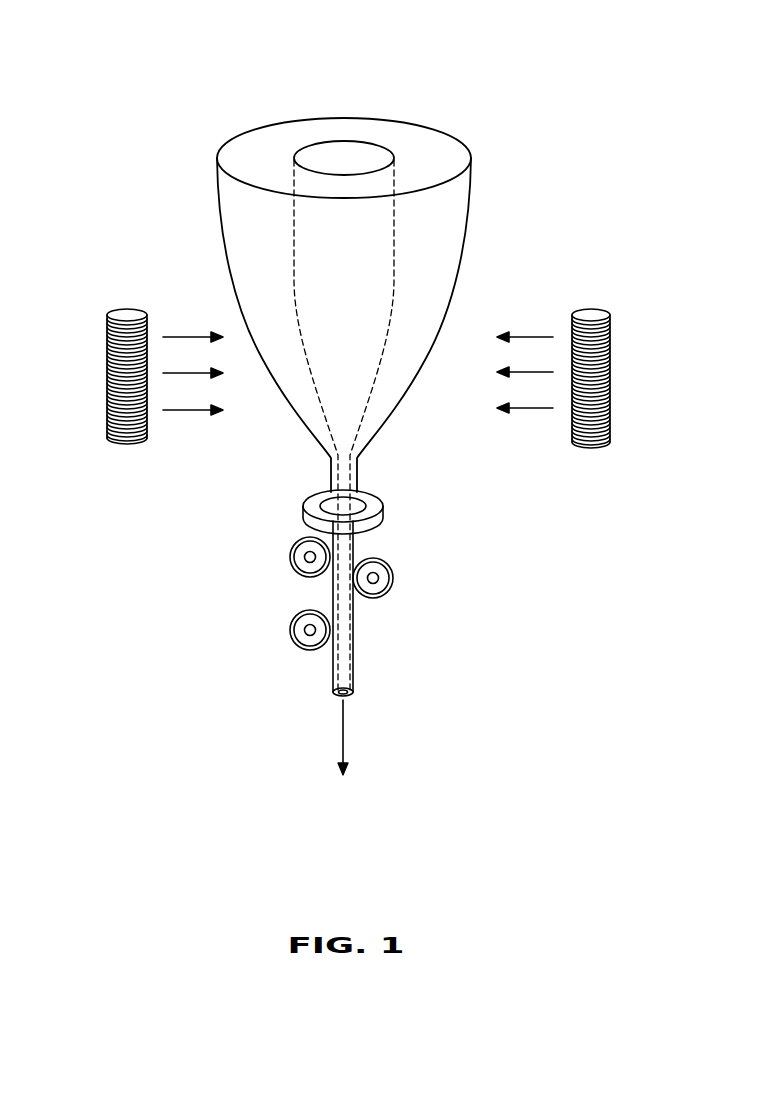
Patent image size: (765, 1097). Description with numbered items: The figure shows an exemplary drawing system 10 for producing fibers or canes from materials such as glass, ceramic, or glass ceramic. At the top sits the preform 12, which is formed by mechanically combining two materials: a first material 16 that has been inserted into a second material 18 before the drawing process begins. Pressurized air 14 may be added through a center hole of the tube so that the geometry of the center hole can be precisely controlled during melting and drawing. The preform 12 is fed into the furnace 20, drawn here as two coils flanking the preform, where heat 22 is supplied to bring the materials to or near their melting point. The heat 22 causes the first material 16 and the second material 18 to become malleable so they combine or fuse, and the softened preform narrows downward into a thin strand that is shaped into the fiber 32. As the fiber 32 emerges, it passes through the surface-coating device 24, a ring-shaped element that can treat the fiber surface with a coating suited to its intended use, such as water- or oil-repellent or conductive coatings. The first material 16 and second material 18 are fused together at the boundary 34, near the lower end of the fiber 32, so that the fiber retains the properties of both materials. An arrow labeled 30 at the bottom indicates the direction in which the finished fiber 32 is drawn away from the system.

The drawing system 10 is at (203, 62).
The preform 12 is at (200, 146).
The pressurized air 14 is at (341, 150).
The first material 16 is at (367, 155).
The second material 18 is at (447, 155).
The furnace 20 is at (110, 312).
The heat 22 is at (186, 301).
The surface-coating device 24 is at (383, 512).
The draw direction 30 is at (343, 753).
The fiber 32 is at (347, 672).
The boundary 34 is at (335, 698).